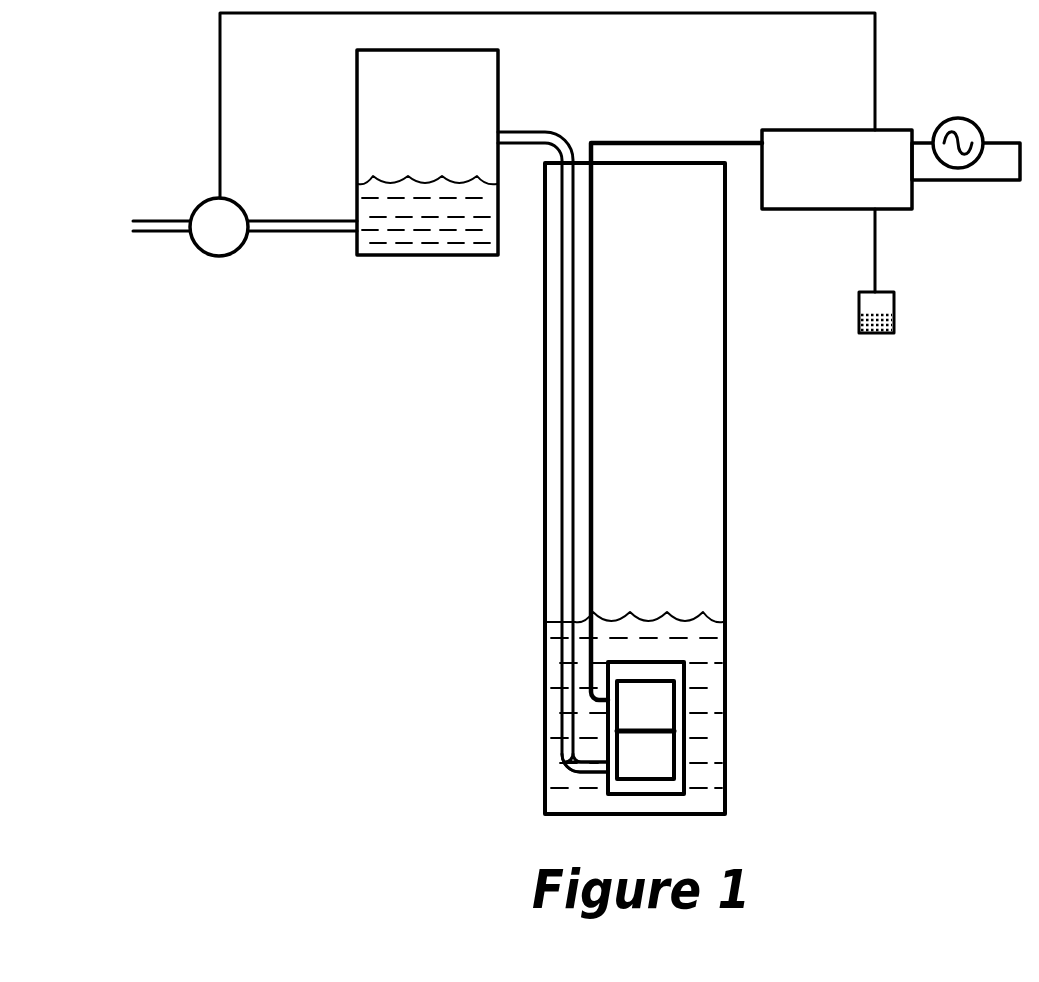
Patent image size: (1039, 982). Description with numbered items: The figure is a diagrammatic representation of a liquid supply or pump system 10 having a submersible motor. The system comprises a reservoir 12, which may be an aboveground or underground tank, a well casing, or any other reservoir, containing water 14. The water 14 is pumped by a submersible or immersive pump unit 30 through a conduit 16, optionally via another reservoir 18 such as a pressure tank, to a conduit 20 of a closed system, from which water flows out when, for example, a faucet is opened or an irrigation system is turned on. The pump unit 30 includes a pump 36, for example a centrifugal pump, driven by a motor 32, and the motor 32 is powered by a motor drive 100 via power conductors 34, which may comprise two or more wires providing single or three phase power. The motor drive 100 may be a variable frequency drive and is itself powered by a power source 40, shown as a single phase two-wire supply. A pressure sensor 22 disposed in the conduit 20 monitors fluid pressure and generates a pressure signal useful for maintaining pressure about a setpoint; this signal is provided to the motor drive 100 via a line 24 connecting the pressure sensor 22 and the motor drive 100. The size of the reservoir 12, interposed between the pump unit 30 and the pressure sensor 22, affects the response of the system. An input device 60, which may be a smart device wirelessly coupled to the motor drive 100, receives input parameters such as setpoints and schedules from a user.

The liquid supply or pump system 10 is at (117, 114).
The reservoir 12 is at (542, 551).
The water 14 is at (683, 618).
The conduit 16 is at (558, 462).
The reservoir 18 is at (447, 257).
The conduit 20 is at (147, 231).
The pressure sensor 22 is at (219, 258).
The line 24 is at (220, 72).
The pump unit 30 is at (706, 722).
The motor 32 is at (674, 688).
The power conductors 34 is at (596, 516).
The pump 36 is at (674, 762).
The power source 40 is at (978, 128).
The input device 60 is at (873, 338).
The motor drive 100 is at (858, 213).